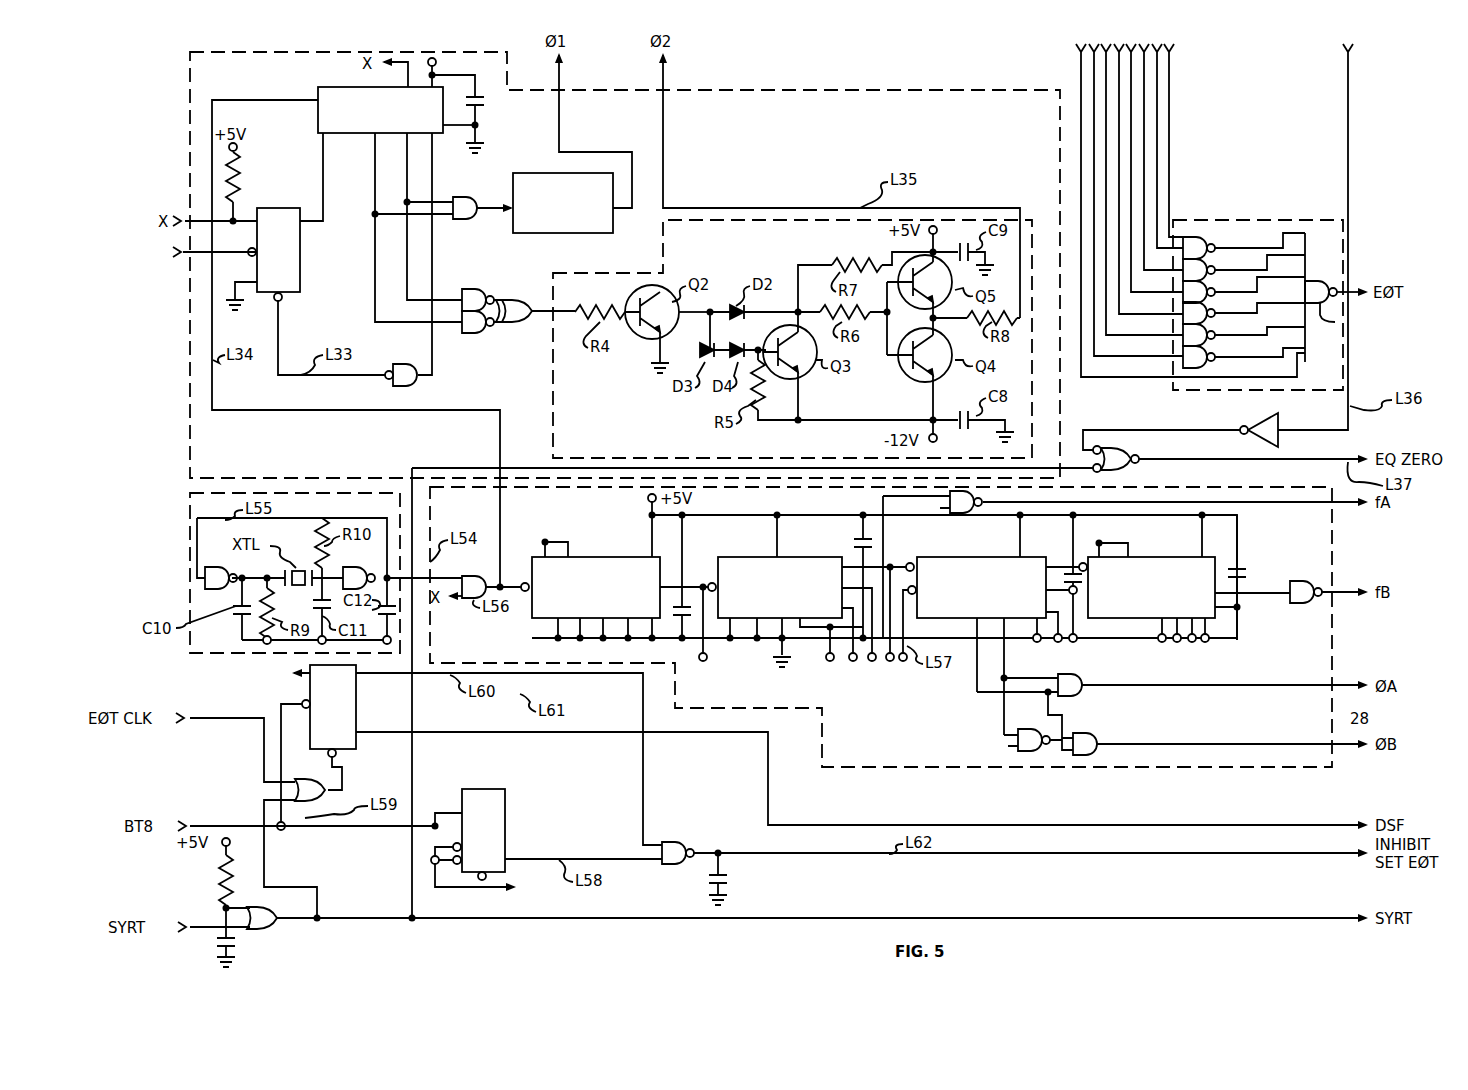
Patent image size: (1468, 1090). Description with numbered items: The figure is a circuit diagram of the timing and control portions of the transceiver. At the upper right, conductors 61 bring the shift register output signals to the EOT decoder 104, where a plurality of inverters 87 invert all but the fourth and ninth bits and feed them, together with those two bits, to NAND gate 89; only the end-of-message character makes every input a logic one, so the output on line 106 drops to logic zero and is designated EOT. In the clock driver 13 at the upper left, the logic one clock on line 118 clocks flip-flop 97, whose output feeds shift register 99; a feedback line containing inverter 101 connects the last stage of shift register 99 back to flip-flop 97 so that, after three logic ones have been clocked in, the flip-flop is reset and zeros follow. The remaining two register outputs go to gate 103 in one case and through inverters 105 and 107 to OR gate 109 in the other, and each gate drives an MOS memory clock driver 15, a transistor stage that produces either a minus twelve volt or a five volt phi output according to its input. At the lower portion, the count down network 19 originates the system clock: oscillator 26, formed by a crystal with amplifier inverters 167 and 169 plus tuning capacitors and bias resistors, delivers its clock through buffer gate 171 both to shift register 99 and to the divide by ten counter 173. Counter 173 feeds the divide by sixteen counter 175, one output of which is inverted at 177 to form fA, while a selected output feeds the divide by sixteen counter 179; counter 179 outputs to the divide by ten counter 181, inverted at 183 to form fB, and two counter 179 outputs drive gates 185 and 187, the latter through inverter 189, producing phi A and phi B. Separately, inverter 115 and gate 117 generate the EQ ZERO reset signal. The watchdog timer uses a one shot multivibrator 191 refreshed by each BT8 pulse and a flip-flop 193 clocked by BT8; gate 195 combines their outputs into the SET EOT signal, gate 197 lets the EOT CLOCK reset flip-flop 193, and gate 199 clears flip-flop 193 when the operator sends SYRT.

The clock driver 13 is at (813, 86).
The MOS memory clock driver 15 is at (512, 173).
The count down network 19 is at (1338, 568).
The oscillator 26 is at (188, 540).
The conductors 61 is at (1172, 122).
The inverters 87 is at (1205, 300).
The NAND gate 89 is at (1335, 322).
The flip-flop 97 is at (291, 262).
The shift register 99 is at (367, 119).
The inverter 101 is at (417, 380).
The gate 103 is at (468, 219).
The EOT decoder 104 is at (1280, 216).
The inverter 105 is at (466, 290).
The line 106 is at (1345, 288).
The inverter 107 is at (466, 334).
The OR gate 109 is at (514, 300).
The inverter 115 is at (1278, 420).
The gate 117 is at (1125, 452).
The line 118 is at (205, 252).
The inverter 167 is at (210, 584).
The inverter 169 is at (372, 556).
The gate 171 is at (458, 602).
The divide by ten counter 173 is at (578, 597).
The divide by sixteen counter 175 is at (762, 597).
The inverter 177 is at (980, 506).
The divide by sixteen counter 179 is at (963, 597).
The divide by ten counter 181 is at (1134, 597).
The inverter 183 is at (1300, 604).
The gate 185 is at (1078, 678).
The gate 187 is at (1088, 736).
The inverter 189 is at (1010, 746).
The one shot multivibrator 191 is at (506, 834).
The flip-flop 193 is at (317, 715).
The gate 195 is at (676, 842).
The gate 197 is at (330, 784).
The gate 199 is at (270, 926).